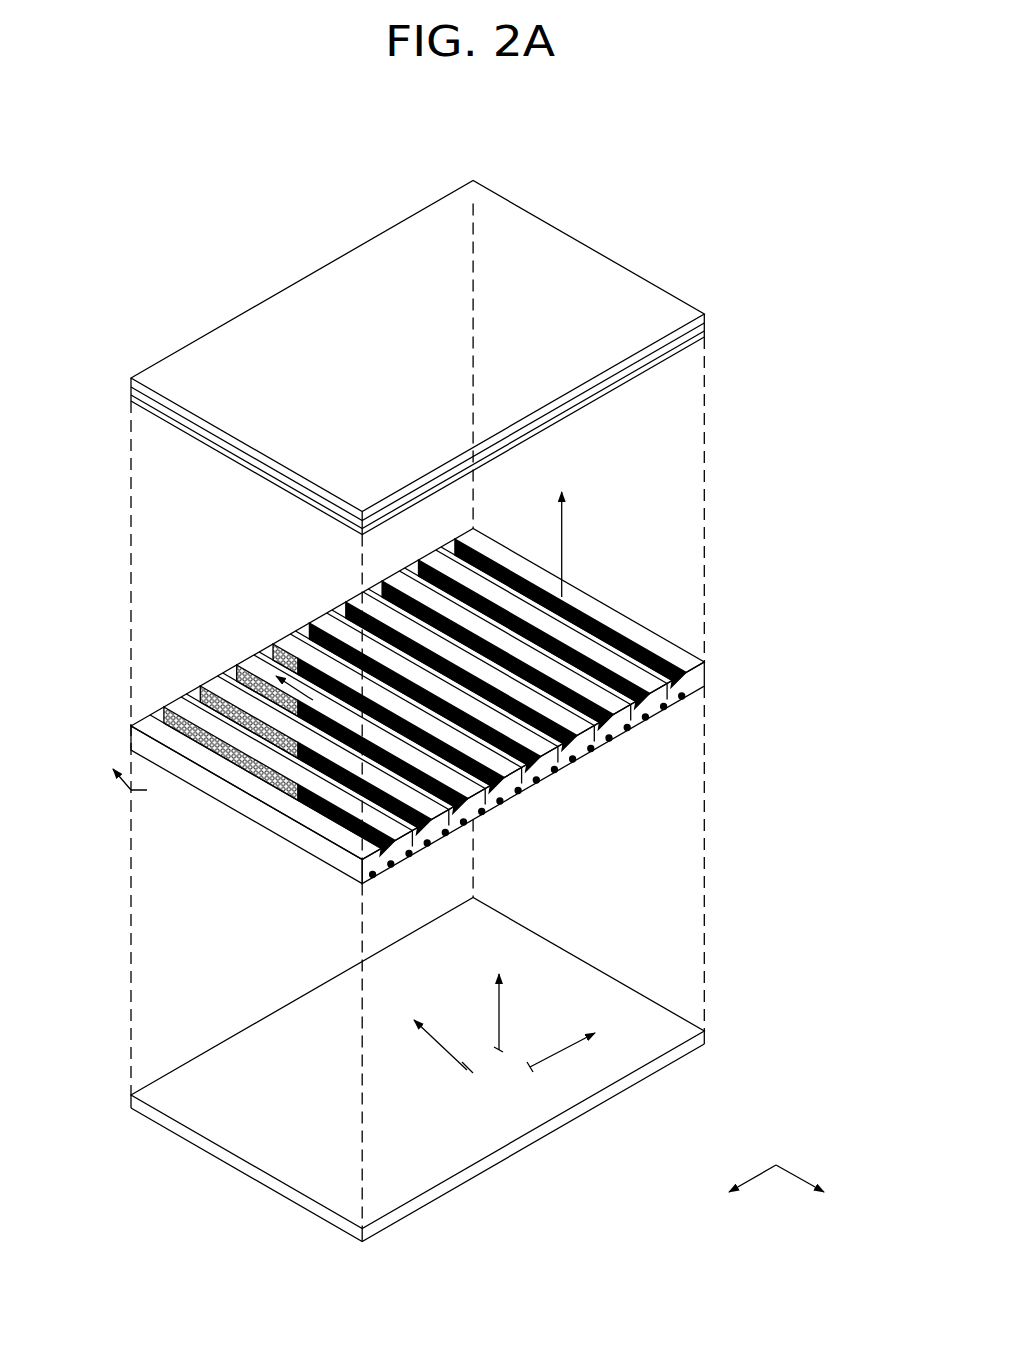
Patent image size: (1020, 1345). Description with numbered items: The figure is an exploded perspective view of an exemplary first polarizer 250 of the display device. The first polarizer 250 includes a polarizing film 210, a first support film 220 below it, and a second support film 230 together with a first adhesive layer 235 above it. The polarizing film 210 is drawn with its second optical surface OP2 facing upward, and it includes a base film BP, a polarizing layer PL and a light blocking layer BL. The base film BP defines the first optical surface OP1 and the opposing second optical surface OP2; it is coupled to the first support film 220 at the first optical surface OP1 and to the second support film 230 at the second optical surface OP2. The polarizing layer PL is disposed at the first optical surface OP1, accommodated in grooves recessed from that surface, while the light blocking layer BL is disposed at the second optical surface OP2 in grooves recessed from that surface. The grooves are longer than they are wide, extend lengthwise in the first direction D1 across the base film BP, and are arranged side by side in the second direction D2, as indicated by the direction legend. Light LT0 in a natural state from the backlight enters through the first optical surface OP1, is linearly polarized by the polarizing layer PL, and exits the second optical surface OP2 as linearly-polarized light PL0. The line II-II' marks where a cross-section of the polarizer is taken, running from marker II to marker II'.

The first polarizer 250 is at (459, 325).
The first adhesive layer 235 is at (704, 320).
The second support film 230 is at (704, 330).
The polarizing film 210 is at (488, 706).
The polarizing layer PL is at (684, 689).
The base film BP is at (671, 650).
The light blocking layer BL is at (637, 642).
The first optical surface OP1 is at (533, 782).
The second optical surface OP2 is at (293, 648).
The linearly-polarized light PL0 is at (562, 548).
The section line II is at (138, 786).
The section line II' is at (304, 694).
The first support film 220 is at (618, 993).
The light LT0 is at (500, 1010).
The first direction D1 is at (810, 1191).
The second direction D2 is at (739, 1191).